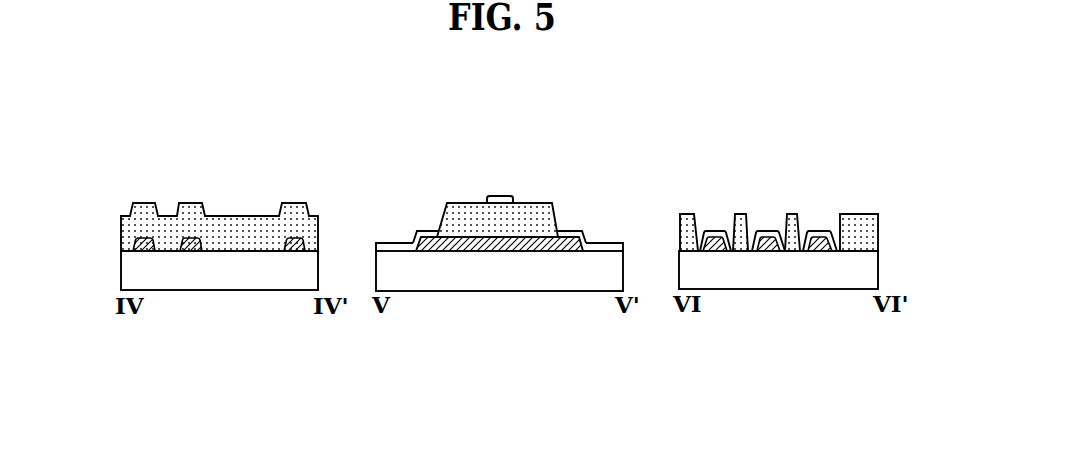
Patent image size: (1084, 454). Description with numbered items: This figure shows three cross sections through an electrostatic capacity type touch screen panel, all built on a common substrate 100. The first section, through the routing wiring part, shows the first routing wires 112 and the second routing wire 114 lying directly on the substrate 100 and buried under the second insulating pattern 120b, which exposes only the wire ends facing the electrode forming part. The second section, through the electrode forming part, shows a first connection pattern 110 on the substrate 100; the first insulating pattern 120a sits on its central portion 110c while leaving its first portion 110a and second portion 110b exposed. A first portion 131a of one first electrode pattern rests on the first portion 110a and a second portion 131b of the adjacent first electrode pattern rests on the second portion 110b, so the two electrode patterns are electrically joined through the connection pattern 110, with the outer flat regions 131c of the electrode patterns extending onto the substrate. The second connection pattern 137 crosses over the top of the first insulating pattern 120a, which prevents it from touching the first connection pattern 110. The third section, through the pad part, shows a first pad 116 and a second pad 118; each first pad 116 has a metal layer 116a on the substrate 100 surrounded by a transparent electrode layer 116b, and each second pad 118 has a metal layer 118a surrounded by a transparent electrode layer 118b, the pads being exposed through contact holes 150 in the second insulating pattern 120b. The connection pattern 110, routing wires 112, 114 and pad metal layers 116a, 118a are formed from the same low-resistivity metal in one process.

The substrate 100 is at (244, 274).
The first connection pattern 110 is at (490, 320).
The first portion of the first connection pattern 110a is at (427, 252).
The second portion of the first connection pattern 110b is at (562, 298).
The central portion of the first connection pattern 110c is at (497, 252).
The first routing wire 112 is at (148, 255).
The second routing wire 114 is at (296, 255).
The first pad 116 is at (792, 251).
The metal layer of the first pad 116a is at (816, 236).
The transparent electrode layer of the first pad 116b is at (830, 232).
The second pad 118 is at (711, 177).
The metal layer of the second pad 118a is at (712, 237).
The transparent electrode layer of the second pad 118b is at (722, 234).
The first insulating pattern 120a is at (533, 218).
The second insulating pattern 120b is at (236, 228).
The first portion of the first electrode pattern 131a is at (427, 229).
The second portion of the first electrode pattern 131b is at (570, 229).
The gate line portion 131c is at (388, 242).
The second connection pattern 137 is at (498, 195).
The contact hole 150 is at (765, 224).